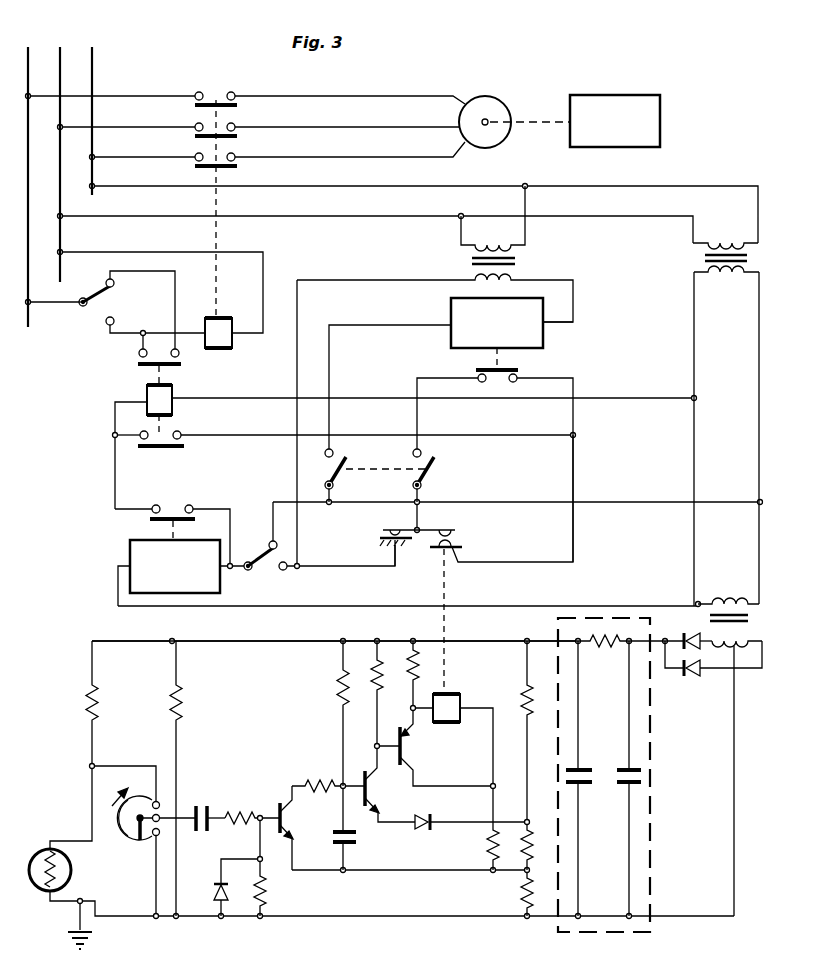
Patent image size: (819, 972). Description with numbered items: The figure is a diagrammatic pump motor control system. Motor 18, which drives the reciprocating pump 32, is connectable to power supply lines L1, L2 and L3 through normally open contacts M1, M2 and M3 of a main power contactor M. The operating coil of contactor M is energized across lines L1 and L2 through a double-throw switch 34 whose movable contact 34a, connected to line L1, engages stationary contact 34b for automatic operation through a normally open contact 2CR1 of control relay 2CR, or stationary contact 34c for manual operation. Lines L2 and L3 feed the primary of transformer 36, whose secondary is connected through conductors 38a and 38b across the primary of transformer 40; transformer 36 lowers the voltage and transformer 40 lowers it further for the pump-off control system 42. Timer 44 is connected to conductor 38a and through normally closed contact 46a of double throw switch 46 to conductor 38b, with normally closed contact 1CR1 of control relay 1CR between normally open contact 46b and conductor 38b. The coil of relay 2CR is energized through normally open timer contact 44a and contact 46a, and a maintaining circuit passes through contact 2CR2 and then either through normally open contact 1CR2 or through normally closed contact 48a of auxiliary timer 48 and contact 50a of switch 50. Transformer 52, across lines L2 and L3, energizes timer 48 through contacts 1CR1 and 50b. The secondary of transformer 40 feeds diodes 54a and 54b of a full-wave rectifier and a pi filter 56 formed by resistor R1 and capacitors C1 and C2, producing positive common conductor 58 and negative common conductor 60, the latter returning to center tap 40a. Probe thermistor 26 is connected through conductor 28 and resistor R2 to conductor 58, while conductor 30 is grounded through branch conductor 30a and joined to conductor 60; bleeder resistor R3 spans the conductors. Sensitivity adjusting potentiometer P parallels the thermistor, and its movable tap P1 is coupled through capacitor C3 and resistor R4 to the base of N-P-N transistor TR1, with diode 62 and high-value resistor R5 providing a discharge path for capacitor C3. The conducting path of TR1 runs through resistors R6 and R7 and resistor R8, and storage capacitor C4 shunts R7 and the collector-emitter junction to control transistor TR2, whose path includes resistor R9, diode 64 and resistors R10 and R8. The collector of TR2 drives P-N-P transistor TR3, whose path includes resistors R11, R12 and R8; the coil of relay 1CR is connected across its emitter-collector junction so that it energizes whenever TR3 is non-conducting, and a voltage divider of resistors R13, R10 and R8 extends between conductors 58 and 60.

The power supply line L1 is at (25, 170).
The power supply line L2 is at (57, 147).
The power supply line L3 is at (91, 104).
The normally open contact M1 is at (235, 93).
The normally open contact M2 is at (235, 124).
The normally open contact M3 is at (235, 154).
The motor 18 is at (497, 100).
The reciprocating pump 32 is at (622, 95).
The transformer 52 is at (470, 262).
The transformer 36 is at (703, 264).
The conductor 38a is at (694, 351).
The conductor 38b is at (759, 351).
The double-throw switch 34 is at (93, 295).
The movable contact 34a is at (90, 306).
The stationary contact 34b is at (114, 284).
The stationary contact 34c is at (114, 321).
The main power contactor M is at (232, 321).
The normally open contact 2CR1 is at (138, 368).
The control relay 2CR is at (147, 396).
The normally open contact 2CR2 is at (182, 441).
The normally open contact 44a is at (172, 505).
The timer 44 is at (130, 554).
The double throw switch 46 is at (258, 576).
The normally closed contact 46a is at (270, 542).
The normally open contact 46b is at (285, 572).
The switch 50 is at (385, 469).
The normally open contact 50a is at (430, 481).
The normally open contact 50b is at (337, 482).
The normally closed contact 1CR1 is at (378, 541).
The normally open contact 1CR2 is at (452, 537).
The control relay 1CR is at (462, 713).
The auxiliary timer 48 is at (451, 339).
The normally closed contact 48a is at (512, 375).
The pump-off control system 42 is at (392, 633).
The positive voltage common conductor 58 is at (476, 641).
The pi filter 56 is at (556, 633).
The resistor R1 is at (617, 648).
The resistor R2 is at (88, 695).
The bleeder resistor R3 is at (178, 700).
The resistor R4 is at (244, 806).
The resistor R5 is at (266, 894).
The resistor R6 is at (340, 684).
The resistor R7 is at (322, 785).
The resistor R8 is at (524, 893).
The resistor R9 is at (377, 693).
The resistor R10 is at (541, 835).
The resistor R11 is at (410, 683).
The resistor R12 is at (490, 851).
The resistor R13 is at (524, 691).
The capacitor C1 is at (586, 767).
The capacitor C2 is at (626, 789).
The coupling capacitor C3 is at (206, 803).
The storage capacitor C4 is at (357, 845).
The transistor TR1 is at (291, 819).
The transistor TR2 is at (380, 797).
The transistor TR3 is at (414, 749).
The probe thermistor 26 is at (42, 856).
The conductor 28 is at (76, 840).
The sensitivity adjusting potentiometer P is at (127, 838).
The movable tap P1 is at (141, 841).
The conductor 30 is at (84, 899).
The branch conductor 30a is at (78, 919).
The negative voltage common conductor 60 is at (380, 916).
The unidirectional conducting diode 62 is at (214, 888).
The unidirectional conducting diode 64 is at (421, 829).
The diode 54a is at (692, 633).
The diode 54b is at (692, 679).
The transformer 40 is at (750, 621).
The center tap 40a is at (736, 651).